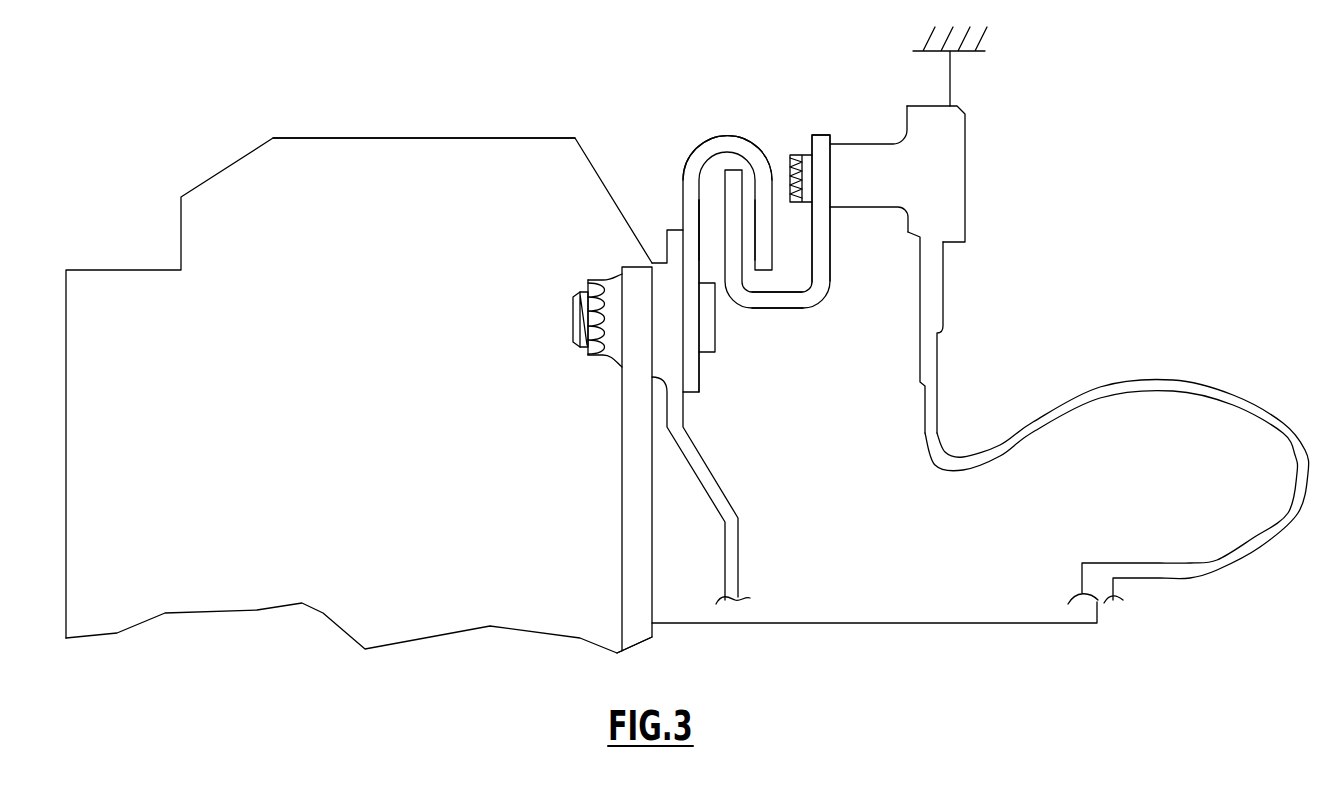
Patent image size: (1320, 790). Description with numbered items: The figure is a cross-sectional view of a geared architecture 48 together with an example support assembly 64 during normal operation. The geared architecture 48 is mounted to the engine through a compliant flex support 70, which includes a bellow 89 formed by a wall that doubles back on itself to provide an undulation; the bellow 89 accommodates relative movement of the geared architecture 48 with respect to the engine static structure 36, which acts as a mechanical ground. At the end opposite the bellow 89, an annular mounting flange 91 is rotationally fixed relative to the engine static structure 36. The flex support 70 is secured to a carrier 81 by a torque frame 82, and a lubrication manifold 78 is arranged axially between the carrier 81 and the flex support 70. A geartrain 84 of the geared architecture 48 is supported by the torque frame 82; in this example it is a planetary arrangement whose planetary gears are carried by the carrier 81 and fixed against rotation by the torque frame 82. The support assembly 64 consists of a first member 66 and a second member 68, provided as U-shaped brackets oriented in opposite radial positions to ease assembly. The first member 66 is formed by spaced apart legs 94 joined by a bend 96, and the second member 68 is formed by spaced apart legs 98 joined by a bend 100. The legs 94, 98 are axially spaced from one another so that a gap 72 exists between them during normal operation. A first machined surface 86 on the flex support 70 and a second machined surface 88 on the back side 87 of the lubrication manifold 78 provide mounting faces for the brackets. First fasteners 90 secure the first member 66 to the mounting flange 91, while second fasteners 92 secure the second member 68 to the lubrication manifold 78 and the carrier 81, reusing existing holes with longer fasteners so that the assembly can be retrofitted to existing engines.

The engine static structure 36 is at (965, 53).
The geared architecture 48 is at (392, 89).
The support assembly 64 is at (787, 100).
The first member 66 is at (813, 308).
The second member 68 is at (697, 132).
The flex support 70 is at (947, 308).
The gap 72 is at (717, 170).
The lubrication manifold 78 is at (738, 497).
The carrier 81 is at (628, 530).
The torque frame 82 is at (852, 628).
The geartrain 84 is at (382, 441).
The first machined surface 86 is at (830, 176).
The back side 87 is at (683, 353).
The second machined surface 88 is at (683, 273).
The bellow 89 is at (1253, 400).
The first fasteners 90 is at (803, 165).
The annular mounting flange 91 is at (952, 140).
The second fasteners 92 is at (577, 342).
The legs 94 is at (732, 260).
The bend 96 is at (777, 300).
The legs 98 is at (690, 192).
The bend 100 is at (714, 142).